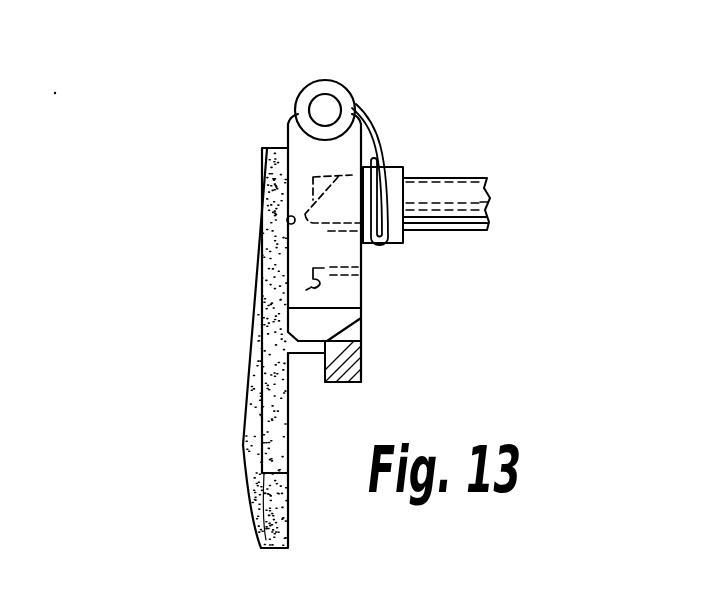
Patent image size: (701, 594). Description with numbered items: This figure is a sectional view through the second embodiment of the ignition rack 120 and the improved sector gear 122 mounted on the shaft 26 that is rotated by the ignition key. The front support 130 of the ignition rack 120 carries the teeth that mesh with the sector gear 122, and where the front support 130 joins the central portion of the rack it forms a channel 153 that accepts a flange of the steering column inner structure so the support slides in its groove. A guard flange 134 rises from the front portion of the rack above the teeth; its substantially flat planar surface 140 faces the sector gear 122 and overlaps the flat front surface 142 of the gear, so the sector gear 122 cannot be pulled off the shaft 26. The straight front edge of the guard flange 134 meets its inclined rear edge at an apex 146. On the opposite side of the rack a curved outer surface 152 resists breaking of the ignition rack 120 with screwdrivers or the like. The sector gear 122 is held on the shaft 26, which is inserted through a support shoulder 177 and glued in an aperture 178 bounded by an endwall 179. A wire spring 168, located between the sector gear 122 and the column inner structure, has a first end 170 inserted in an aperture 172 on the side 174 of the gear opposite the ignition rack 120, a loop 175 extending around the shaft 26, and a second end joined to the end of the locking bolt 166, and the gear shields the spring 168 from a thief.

The shaft 26 is at (450, 180).
The ignition rack 120 is at (233, 207).
The sector gear 122 is at (373, 315).
The support 130 is at (352, 382).
The guard flange 134 is at (255, 243).
The flat planar surface 140 is at (287, 220).
The front surface 142 is at (287, 255).
The apex 146 is at (287, 218).
The curved outer surface 152 is at (245, 390).
The channel 153 is at (302, 372).
The locking bolt 166 is at (325, 80).
The spring 168 is at (394, 131).
The first end 170 is at (306, 290).
The aperture 172 is at (362, 275).
The side 174 is at (362, 298).
The loop 175 is at (393, 153).
The support shoulder 177 is at (392, 238).
The aperture 178 is at (313, 177).
The endwall 179 is at (490, 202).